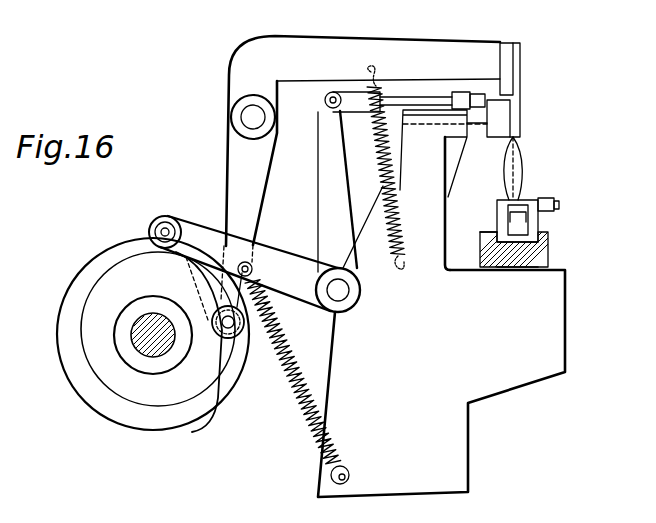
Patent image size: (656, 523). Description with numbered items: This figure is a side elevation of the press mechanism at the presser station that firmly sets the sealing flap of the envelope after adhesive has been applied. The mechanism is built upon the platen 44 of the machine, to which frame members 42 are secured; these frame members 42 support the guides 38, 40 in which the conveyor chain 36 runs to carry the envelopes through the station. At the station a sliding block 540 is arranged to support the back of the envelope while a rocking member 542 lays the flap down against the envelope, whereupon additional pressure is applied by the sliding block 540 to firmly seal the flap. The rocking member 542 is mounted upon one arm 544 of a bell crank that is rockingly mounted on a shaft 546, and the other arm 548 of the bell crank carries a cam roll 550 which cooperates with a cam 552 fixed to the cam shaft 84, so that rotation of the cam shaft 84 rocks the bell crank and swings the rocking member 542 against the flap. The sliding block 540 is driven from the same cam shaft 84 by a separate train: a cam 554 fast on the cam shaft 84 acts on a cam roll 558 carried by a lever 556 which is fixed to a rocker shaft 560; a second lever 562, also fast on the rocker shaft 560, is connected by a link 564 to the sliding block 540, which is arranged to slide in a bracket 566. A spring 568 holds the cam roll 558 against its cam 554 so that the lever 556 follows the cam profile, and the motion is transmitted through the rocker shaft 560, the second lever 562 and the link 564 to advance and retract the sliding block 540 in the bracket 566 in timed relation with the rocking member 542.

The conveyor chain 36 is at (515, 224).
The guide 38 is at (480, 254).
The guide 40 is at (547, 247).
The frame members 42 is at (508, 264).
The platen 44 is at (560, 298).
The cam shaft 84 is at (147, 342).
The sliding block 540 is at (502, 112).
The rocking member 542 is at (520, 67).
The arm 544 is at (460, 43).
The shaft 546 is at (237, 112).
The arm 548 is at (227, 183).
The cam roll 550 is at (231, 340).
The cam 552 is at (190, 424).
The cam 554 is at (148, 402).
The lever 556 is at (262, 232).
The cam roll 558 is at (150, 226).
The rocker shaft 560 is at (345, 295).
The second lever 562 is at (324, 194).
The link 564 is at (416, 98).
The bracket 566 is at (440, 208).
The spring 568 is at (375, 143).